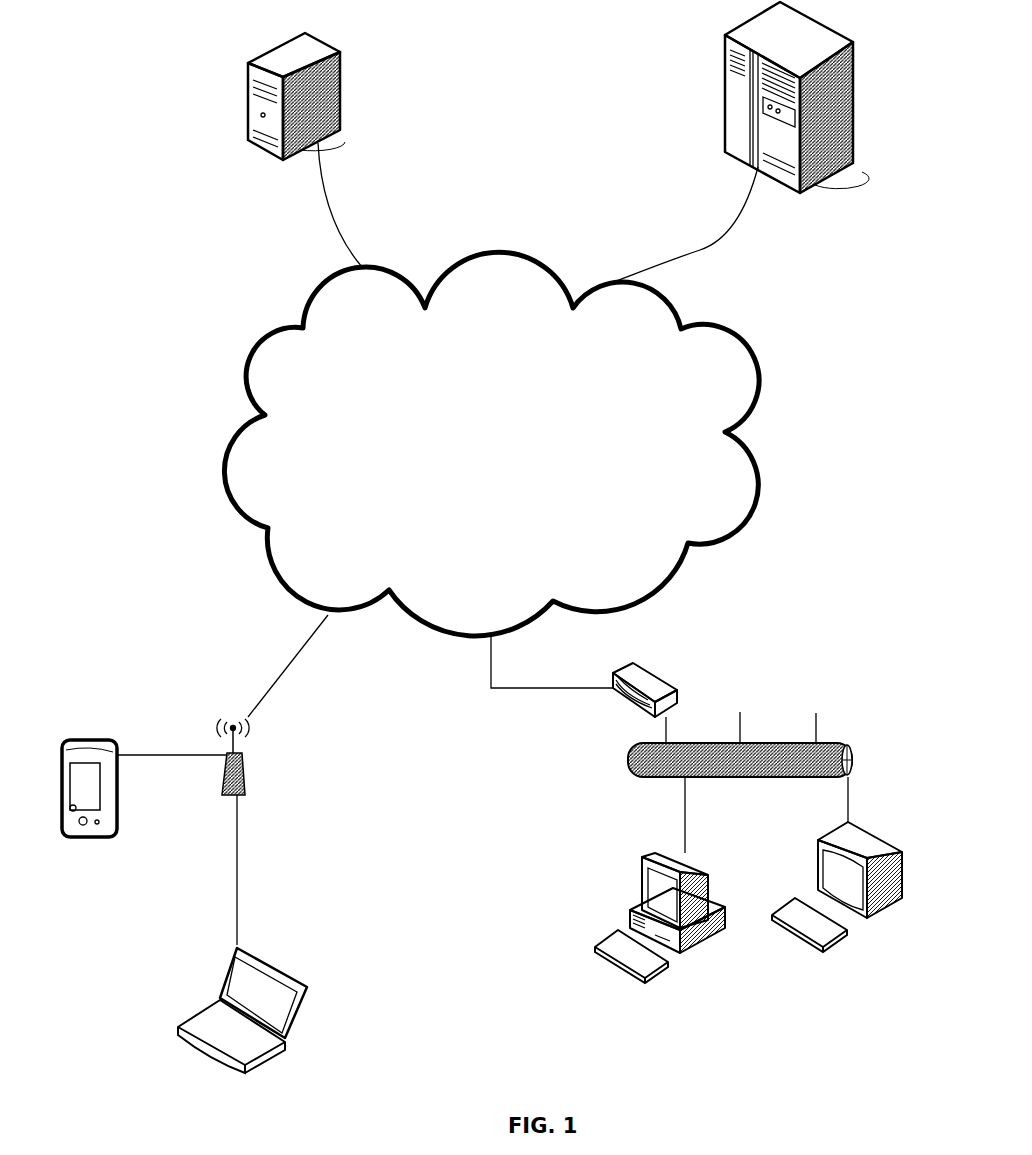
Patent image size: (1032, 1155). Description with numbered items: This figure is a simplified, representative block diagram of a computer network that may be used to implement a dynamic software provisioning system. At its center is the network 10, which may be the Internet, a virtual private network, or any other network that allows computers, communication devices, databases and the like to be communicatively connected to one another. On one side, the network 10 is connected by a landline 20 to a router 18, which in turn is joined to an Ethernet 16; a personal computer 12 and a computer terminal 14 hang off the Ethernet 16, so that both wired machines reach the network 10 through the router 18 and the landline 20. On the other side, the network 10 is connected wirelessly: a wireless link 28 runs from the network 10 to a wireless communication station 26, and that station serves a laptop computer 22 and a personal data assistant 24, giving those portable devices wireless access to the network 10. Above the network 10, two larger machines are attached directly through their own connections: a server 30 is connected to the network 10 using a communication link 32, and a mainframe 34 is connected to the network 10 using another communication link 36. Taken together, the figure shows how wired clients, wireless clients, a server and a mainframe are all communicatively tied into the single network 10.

The network 10 is at (188, 329).
The personal computer 12 is at (633, 900).
The computer terminal 14 is at (888, 842).
The Ethernet 16 is at (845, 743).
The router 18 is at (677, 692).
The landline 20 is at (532, 690).
The laptop computer 22 is at (260, 1063).
The personal data assistant 24 is at (92, 740).
The wireless communication station 26 is at (247, 790).
The wireless link 28 is at (277, 675).
The server 30 is at (344, 97).
The communication link 32 is at (350, 242).
The mainframe 34 is at (813, 190).
The communication link 36 is at (727, 227).